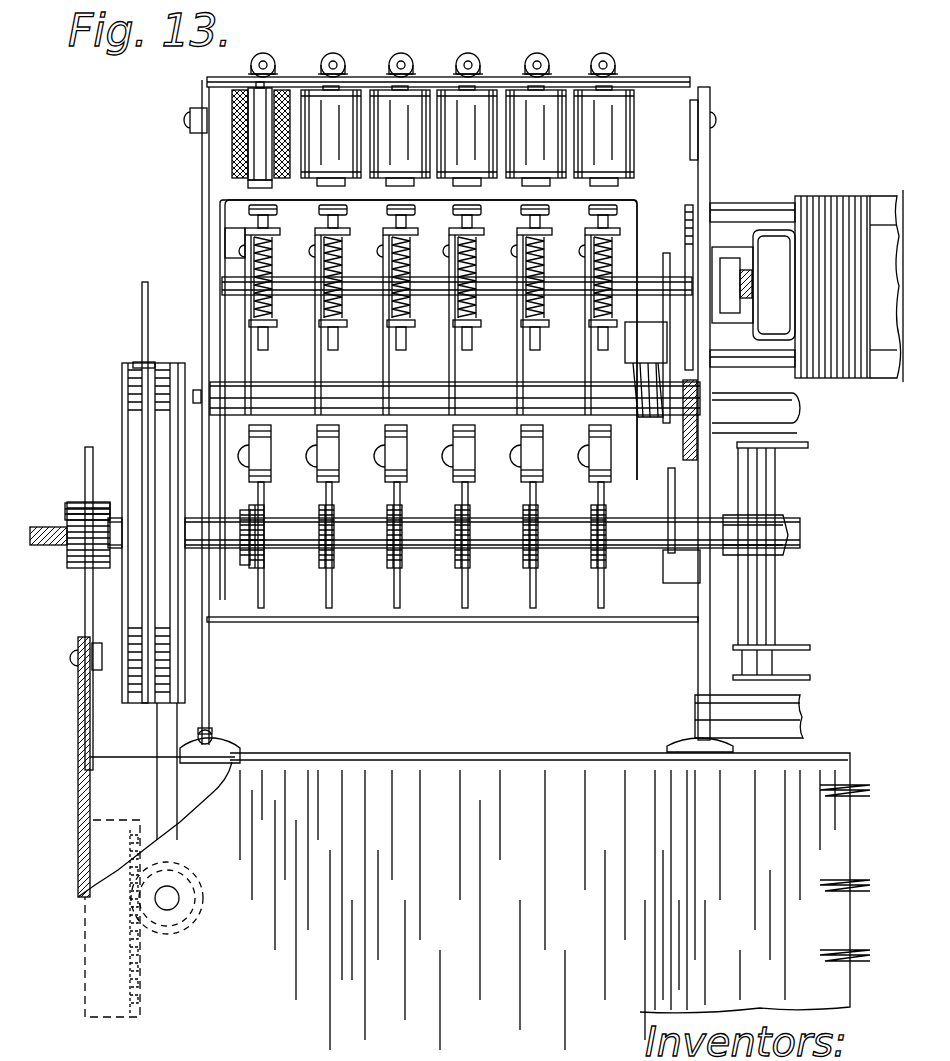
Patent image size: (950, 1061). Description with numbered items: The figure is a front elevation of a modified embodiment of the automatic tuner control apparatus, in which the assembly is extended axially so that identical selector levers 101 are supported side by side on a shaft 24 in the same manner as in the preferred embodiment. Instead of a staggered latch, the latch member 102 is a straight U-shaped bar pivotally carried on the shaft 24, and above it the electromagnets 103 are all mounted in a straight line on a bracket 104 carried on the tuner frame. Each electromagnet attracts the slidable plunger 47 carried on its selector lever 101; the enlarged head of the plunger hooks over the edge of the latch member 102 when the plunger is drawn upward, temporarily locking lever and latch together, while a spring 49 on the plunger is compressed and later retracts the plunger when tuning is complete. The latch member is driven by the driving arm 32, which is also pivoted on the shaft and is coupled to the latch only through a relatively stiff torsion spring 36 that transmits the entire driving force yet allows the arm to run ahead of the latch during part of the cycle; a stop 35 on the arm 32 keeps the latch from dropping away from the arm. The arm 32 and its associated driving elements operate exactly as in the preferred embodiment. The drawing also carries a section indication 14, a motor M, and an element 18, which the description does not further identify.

The electromagnets 103 is at (612, 100).
The bracket 104 is at (690, 88).
The latch member 102 is at (640, 198).
The plunger 47 is at (612, 218).
The driving arm 32 is at (668, 265).
The motor M is at (835, 207).
The shaft 24 is at (195, 392).
The selector levers 101 is at (445, 368).
The spring 49 is at (478, 297).
The stop 35 is at (635, 348).
The torsion spring 36 is at (655, 428).
The rod 18 is at (469, 584).
The section line 14- 14 is at (617, 29).